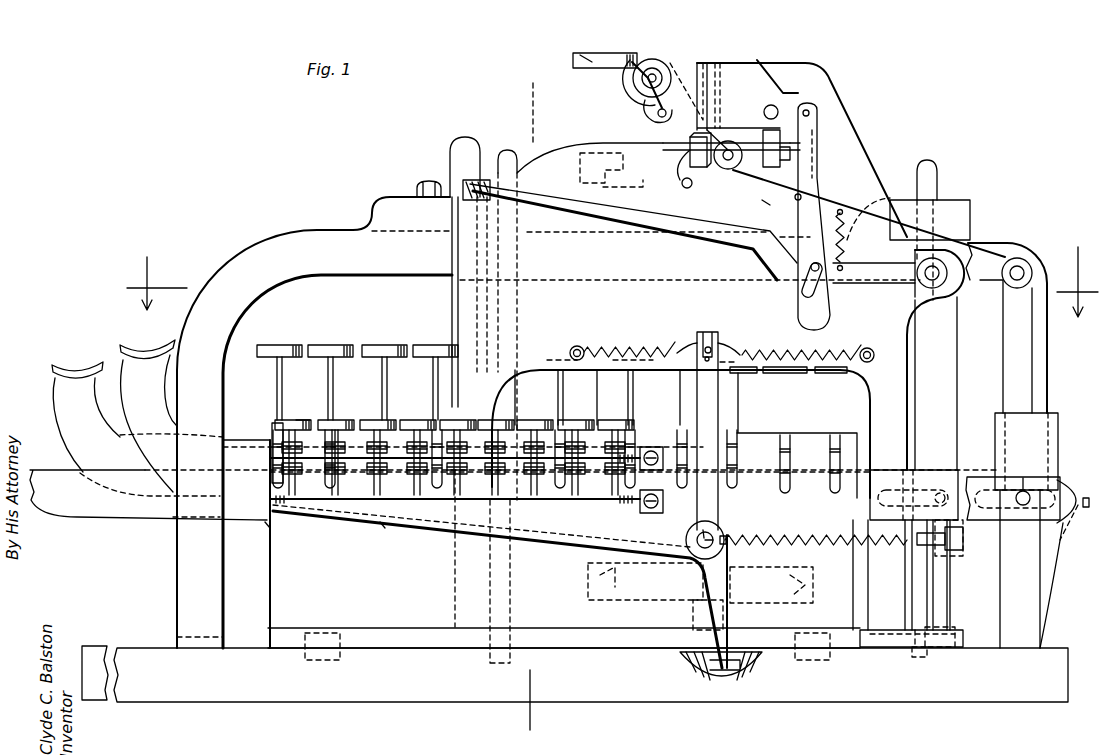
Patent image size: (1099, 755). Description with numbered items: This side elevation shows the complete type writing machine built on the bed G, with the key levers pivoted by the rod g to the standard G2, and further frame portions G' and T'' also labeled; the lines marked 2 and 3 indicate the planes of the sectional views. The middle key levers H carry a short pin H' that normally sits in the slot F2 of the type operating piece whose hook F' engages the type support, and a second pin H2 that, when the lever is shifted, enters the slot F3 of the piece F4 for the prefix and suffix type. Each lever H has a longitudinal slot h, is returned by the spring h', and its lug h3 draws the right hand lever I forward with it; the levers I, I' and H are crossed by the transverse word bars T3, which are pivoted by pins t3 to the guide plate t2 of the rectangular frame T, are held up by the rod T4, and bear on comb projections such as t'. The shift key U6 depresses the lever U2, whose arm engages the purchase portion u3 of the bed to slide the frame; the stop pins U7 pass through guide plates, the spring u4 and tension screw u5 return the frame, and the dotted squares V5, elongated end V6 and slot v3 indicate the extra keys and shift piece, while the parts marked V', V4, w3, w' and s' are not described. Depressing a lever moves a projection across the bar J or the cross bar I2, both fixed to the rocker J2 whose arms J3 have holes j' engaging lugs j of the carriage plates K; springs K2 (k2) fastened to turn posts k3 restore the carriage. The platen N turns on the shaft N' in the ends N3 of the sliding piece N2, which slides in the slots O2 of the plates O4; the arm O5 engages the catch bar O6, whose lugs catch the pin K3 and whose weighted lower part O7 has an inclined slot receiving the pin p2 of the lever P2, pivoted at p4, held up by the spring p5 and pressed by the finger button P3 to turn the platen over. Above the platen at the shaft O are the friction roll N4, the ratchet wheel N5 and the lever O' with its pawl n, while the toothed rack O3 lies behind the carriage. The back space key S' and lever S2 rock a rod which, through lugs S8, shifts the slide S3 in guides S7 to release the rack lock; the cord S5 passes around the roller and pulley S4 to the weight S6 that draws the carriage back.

The bed G is at (575, 674).
The rod T4 is at (327, 660).
The left frame standard G' is at (295, 422).
The lower frame T'' is at (541, 544).
The finger button P3 is at (480, 190).
The lever P2 is at (568, 205).
The right hand key lever I is at (148, 416).
The key lever I' is at (86, 417).
The middle key lever H is at (148, 495).
The section line 3 is at (612, 282).
The section line 2 is at (513, 407).
The key S' is at (621, 182).
The lugs S8 is at (688, 147).
The slide S3 is at (722, 137).
The guides S7 is at (718, 168).
The lever S2 is at (673, 168).
The pulley S4 is at (745, 172).
The cord S5 is at (855, 207).
The weight S6 is at (995, 423).
The spring p5 is at (848, 250).
The pin K3 is at (770, 205).
The extending arm O5 is at (820, 102).
The slots O2 is at (750, 60).
The plates O4 is at (770, 103).
The ratchet toothed rack O3 is at (758, 70).
The lower part of catch arm O7 is at (831, 320).
The pin p2 is at (845, 288).
The catch bar O6 is at (812, 163).
The pawl n is at (577, 63).
The ratchet lock spacing wheel N5 is at (633, 80).
The line spacing and friction roll N4 is at (630, 95).
The platen N is at (637, 93).
The pivot shaft N' is at (633, 126).
The ends N3 is at (685, 62).
The sliding piece N2 is at (768, 27).
The shaft O is at (659, 45).
The lever O' is at (667, 52).
The pivot p4 is at (925, 290).
The piece F4 is at (923, 328).
The slot F3 is at (883, 488).
The pin H2 is at (940, 492).
The pivot rod g is at (1026, 459).
The lug h3 is at (1080, 480).
The longitudinal slot h is at (1067, 533).
The spring h' is at (1052, 585).
The standard G2 is at (1020, 569).
The post s' is at (908, 583).
The slot v3 is at (943, 617).
The tension screw u5 is at (957, 543).
The spring u4 is at (805, 543).
The hook F' is at (681, 432).
The plates K is at (623, 319).
The turn posts k3 is at (578, 346).
The springs K2 is at (667, 343).
The holes j' is at (685, 465).
The pins j is at (720, 339).
The arms J3 is at (732, 390).
The key V' is at (432, 375).
The key bar V4 is at (398, 445).
The elongated end V6 is at (300, 421).
The guide plate t2 is at (273, 480).
The pivot pins t3 is at (780, 480).
The projections t' is at (708, 496).
The transverse bars T3 is at (273, 430).
The shift key U6 is at (278, 450).
The collar w3 is at (470, 478).
The lever U2 is at (514, 589).
The shift key pins U7 is at (380, 522).
The extra word keys V5 is at (267, 522).
The slot F2 is at (530, 521).
The pin H' is at (452, 552).
The springs k2 is at (513, 580).
The rocker J2 is at (645, 581).
The cross bar I2 is at (606, 621).
The rectangular frame T is at (548, 623).
The pivot wheel w' is at (682, 540).
The purchase portion u3 is at (705, 680).
The bar J is at (805, 585).